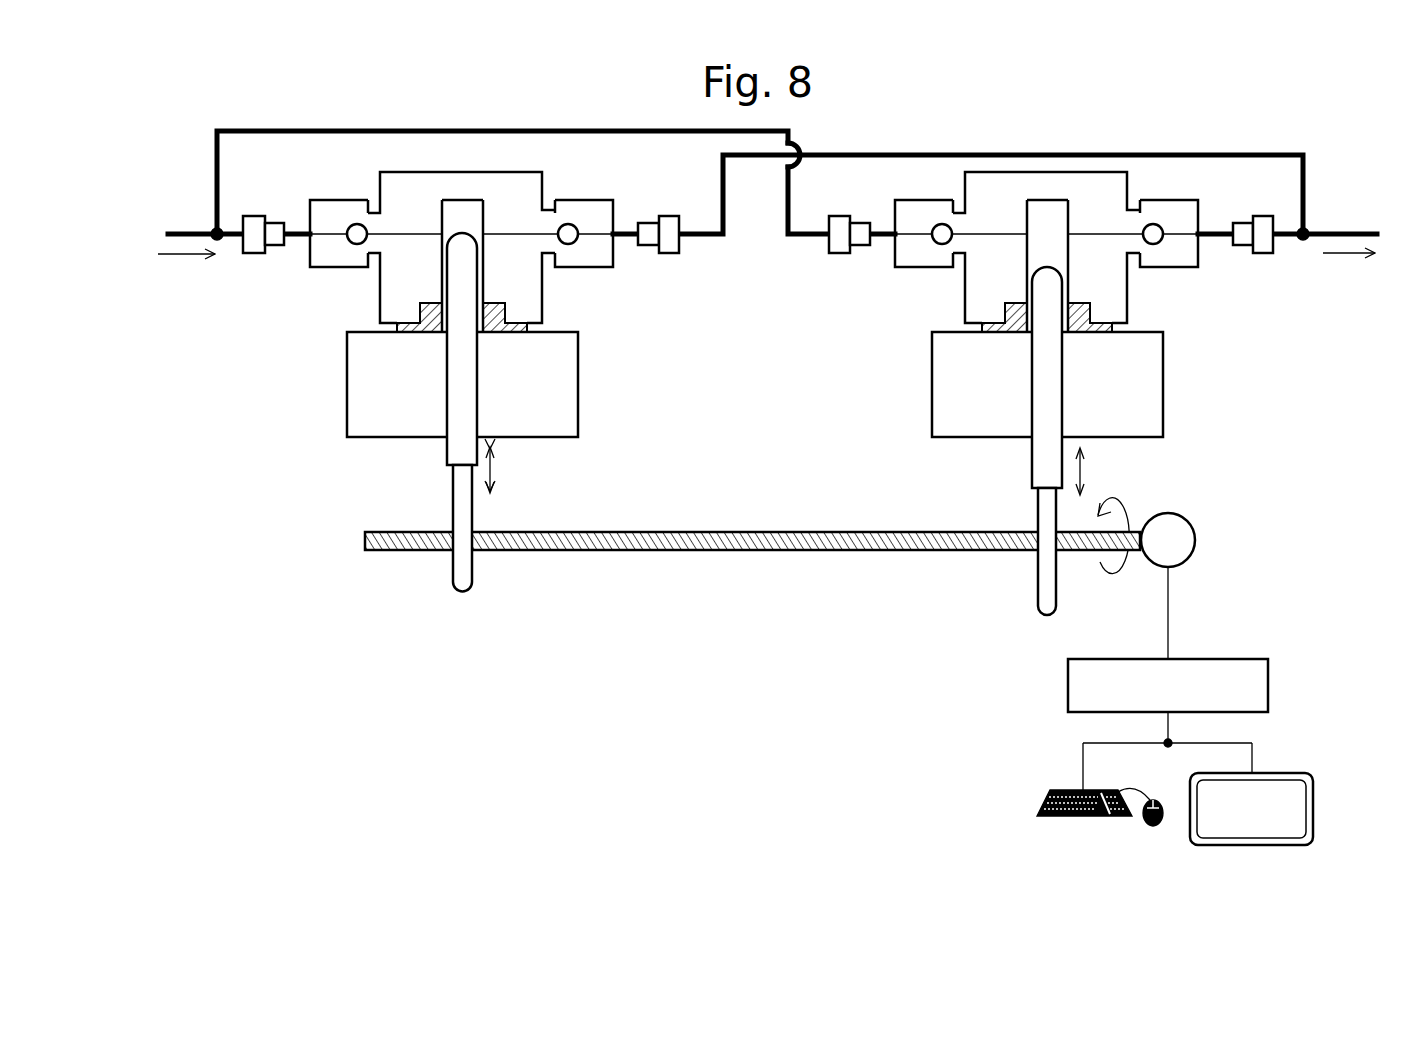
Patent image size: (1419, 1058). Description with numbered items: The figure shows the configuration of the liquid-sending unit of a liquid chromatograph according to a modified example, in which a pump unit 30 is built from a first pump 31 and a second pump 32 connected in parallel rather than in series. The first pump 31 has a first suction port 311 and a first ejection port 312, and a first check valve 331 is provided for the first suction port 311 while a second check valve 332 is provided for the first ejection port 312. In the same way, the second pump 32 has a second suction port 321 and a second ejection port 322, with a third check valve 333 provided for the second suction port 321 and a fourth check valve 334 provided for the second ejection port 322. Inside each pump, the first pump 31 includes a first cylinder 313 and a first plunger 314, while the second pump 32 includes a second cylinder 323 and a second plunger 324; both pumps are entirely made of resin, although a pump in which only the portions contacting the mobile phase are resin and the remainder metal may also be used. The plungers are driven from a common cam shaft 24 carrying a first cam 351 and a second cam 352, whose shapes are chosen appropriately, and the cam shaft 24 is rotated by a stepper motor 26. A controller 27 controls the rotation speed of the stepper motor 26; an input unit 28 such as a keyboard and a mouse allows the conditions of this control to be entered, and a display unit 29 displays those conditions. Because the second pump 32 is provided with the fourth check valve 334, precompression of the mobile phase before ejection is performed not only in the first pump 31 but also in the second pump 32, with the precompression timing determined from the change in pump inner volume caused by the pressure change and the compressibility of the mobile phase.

The cam shaft 24 is at (852, 540).
The stepper motor 26 is at (1173, 515).
The controller 27 is at (1222, 658).
The input unit 28 is at (1055, 815).
The display unit 29 is at (1232, 810).
The pump unit 30 is at (751, 503).
The first pump 31 is at (461, 326).
The first suction port 311 is at (310, 238).
The first ejection port 312 is at (615, 240).
The first cylinder 313 is at (462, 218).
The first plunger 314 is at (462, 355).
The second pump 32 is at (1051, 327).
The second suction port 321 is at (895, 238).
The second ejection port 322 is at (1198, 238).
The second cylinder 323 is at (1043, 217).
The second plunger 324 is at (1052, 353).
The first check valve 331 is at (258, 247).
The second check valve 332 is at (660, 237).
The third check valve 333 is at (848, 242).
The fourth check valve 334 is at (1263, 233).
The first cam 351 is at (462, 580).
The second cam 352 is at (1048, 578).